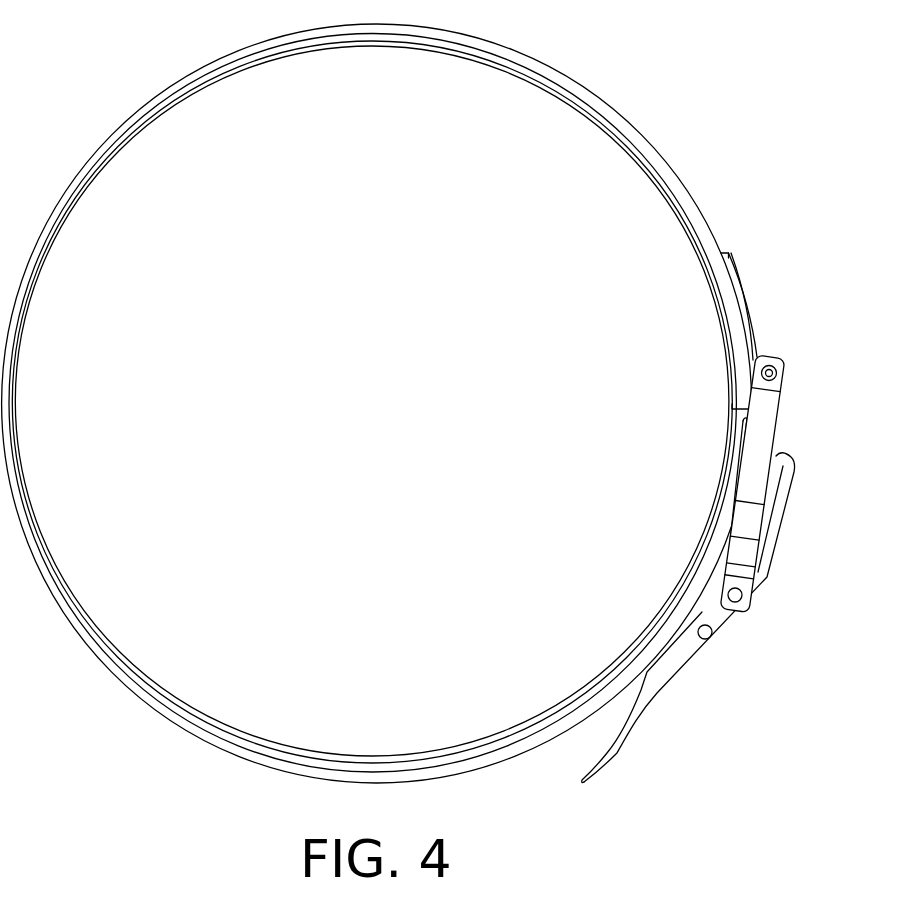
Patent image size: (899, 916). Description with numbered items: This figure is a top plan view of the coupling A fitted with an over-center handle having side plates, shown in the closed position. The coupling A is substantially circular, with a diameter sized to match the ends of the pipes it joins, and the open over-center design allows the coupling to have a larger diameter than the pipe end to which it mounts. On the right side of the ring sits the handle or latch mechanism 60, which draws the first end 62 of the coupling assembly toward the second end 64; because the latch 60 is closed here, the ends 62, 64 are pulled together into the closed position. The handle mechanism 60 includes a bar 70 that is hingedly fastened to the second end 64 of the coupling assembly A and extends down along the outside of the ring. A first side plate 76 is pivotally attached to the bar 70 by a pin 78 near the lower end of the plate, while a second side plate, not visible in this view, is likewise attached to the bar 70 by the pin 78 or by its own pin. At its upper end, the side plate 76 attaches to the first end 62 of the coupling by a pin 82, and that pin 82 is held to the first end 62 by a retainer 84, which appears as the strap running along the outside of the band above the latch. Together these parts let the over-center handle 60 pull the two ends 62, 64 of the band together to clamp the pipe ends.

The coupling A is at (115, 90).
The handle or latch mechanism 60 is at (718, 549).
The first end 62 is at (718, 392).
The second end 64 is at (726, 428).
The bar 70 is at (673, 666).
The first side plate 76 is at (773, 407).
The pin 78 is at (742, 595).
The pin 82 is at (771, 366).
The retainer 84 is at (741, 291).